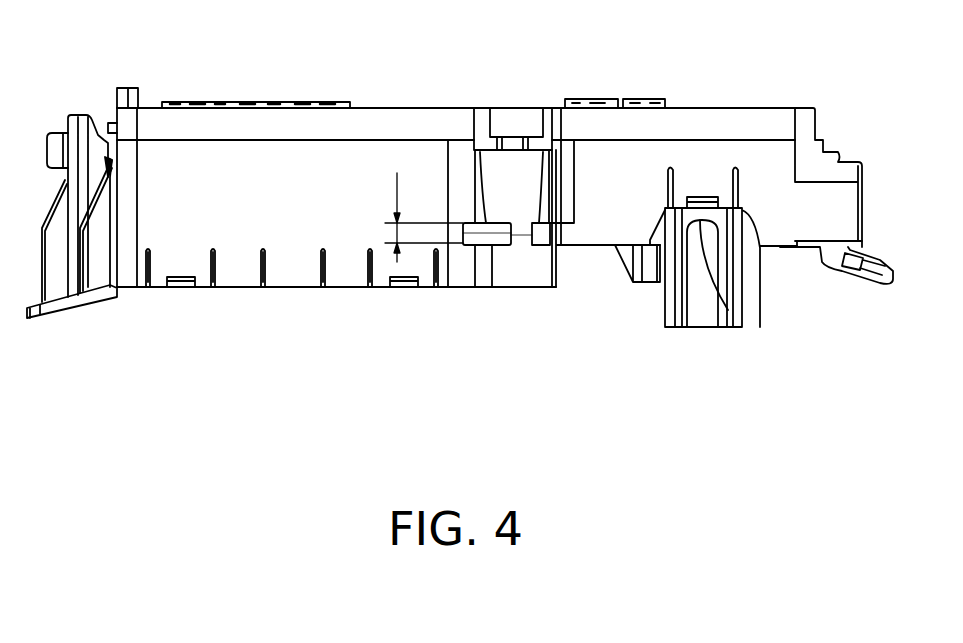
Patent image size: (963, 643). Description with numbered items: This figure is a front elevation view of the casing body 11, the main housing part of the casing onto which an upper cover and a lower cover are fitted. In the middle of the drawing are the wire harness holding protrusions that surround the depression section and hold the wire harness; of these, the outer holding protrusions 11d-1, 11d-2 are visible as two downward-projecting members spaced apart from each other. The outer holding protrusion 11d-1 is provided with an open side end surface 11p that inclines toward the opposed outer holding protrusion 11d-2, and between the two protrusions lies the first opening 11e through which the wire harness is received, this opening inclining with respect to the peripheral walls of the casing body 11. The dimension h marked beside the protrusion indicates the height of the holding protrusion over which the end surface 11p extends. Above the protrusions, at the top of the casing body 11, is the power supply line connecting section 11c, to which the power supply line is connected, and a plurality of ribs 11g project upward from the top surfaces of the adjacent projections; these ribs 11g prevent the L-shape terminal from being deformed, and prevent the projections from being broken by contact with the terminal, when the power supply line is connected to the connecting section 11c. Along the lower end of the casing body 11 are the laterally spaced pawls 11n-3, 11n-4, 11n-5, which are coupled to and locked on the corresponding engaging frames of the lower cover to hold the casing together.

The casing body 11 is at (460, 203).
The power supply line connecting section 11c is at (508, 137).
The ribs 11g is at (473, 203).
The outer holding protrusion 11d-1 is at (492, 287).
The outer holding protrusion 11d-2 is at (555, 284).
The first opening 11e is at (520, 235).
The open side end surface 11p is at (470, 238).
The pawl 11n-3 is at (735, 327).
The pawl 11n-4 is at (397, 287).
The pawl 11n-5 is at (182, 287).
The height of projection h is at (420, 217).